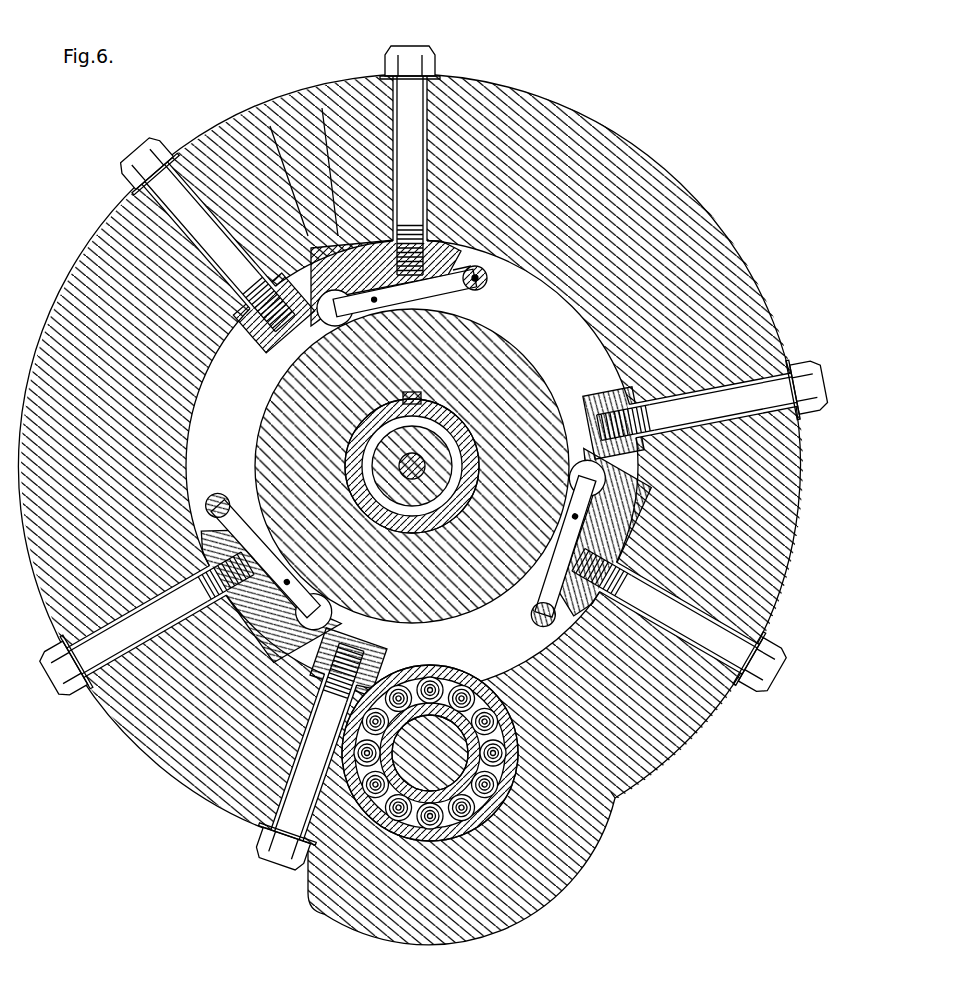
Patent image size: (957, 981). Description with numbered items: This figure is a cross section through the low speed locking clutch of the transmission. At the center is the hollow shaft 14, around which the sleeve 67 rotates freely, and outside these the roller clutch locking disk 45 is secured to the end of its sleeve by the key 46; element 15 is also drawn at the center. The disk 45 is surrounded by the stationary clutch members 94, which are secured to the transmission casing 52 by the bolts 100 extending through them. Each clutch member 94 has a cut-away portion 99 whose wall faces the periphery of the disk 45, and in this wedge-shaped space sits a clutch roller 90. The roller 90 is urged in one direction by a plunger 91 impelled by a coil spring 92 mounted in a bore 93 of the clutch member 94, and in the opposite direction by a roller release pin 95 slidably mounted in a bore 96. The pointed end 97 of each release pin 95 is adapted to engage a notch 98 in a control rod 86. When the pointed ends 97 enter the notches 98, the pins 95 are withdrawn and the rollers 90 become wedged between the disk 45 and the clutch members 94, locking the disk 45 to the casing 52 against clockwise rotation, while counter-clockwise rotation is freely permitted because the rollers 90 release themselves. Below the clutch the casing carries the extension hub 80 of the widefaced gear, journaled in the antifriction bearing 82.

The hollow shaft 14 is at (470, 430).
The sleeve 15 is at (460, 410).
The roller clutch locking disk 45 is at (445, 395).
The key 46 is at (412, 388).
The transmission casing 52 is at (90, 246).
The sleeve 67 is at (480, 452).
The extension hub 80 is at (585, 843).
The antifriction bearing 82 is at (607, 792).
The control rod 86 is at (469, 280).
The clutch roller 90 is at (314, 100).
The plunger 91 is at (262, 118).
The coil spring 92 is at (272, 352).
The bore 93 is at (262, 345).
The stationary clutch member 94 is at (425, 235).
The roller release pin 95 is at (440, 283).
The bore 96 is at (448, 255).
The pointed end 97 is at (238, 477).
The notch 98 is at (476, 268).
The cut-away portion 99 is at (352, 90).
The bolt 100 is at (160, 184).